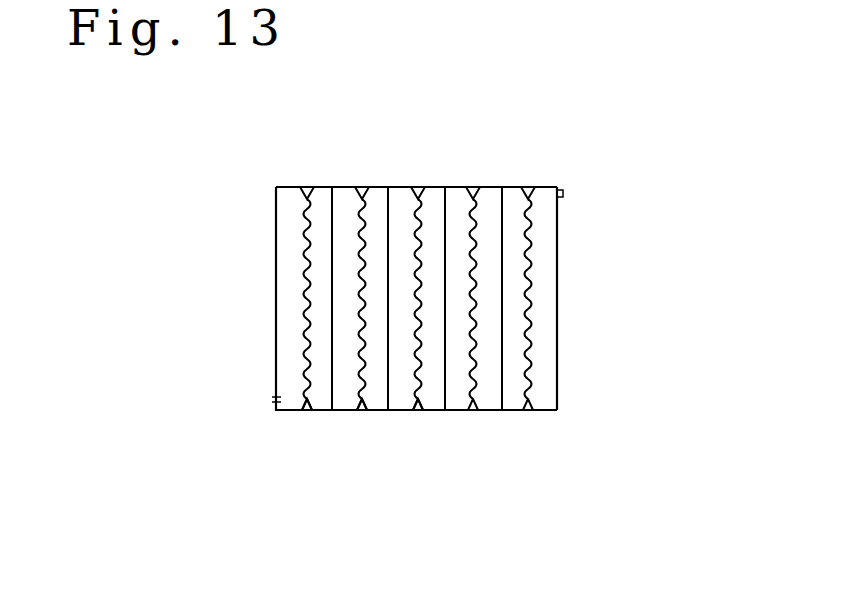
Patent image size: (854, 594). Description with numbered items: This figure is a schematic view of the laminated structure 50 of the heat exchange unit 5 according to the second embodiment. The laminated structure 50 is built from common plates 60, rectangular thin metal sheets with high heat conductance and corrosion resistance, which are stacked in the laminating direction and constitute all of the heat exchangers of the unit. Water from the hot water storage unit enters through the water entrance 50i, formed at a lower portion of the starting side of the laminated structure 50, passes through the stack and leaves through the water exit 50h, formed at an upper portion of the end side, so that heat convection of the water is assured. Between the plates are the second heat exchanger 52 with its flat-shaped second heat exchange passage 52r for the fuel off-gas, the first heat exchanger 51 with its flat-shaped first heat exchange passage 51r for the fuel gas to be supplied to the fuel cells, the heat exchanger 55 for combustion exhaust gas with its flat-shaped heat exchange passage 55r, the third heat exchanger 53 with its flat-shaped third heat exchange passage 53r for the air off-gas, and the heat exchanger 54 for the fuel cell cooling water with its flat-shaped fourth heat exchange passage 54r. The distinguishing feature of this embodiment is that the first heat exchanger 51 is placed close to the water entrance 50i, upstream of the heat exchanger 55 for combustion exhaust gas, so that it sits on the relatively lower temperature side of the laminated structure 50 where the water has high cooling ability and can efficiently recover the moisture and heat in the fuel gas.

The heat exchange unit 5 is at (257, 248).
The laminated structure 50 is at (276, 296).
The water exit 50h is at (563, 193).
The water entrance 50i is at (276, 400).
The first heat exchanger 51 is at (383, 412).
The first heat exchange passage 51r is at (375, 412).
The second heat exchanger 52 is at (325, 412).
The second heat exchange passage 52r is at (313, 412).
The third heat exchanger 53 is at (488, 375).
The third heat exchange passage 53r is at (490, 390).
The heat exchanger for the fuel cell cooling water 54 is at (549, 293).
The fourth heat exchange passage 54r is at (548, 265).
The heat exchanger for combustion exhaust gas 55 is at (433, 412).
The heat exchange passage 55r is at (420, 412).
The common plate 60 is at (316, 187).